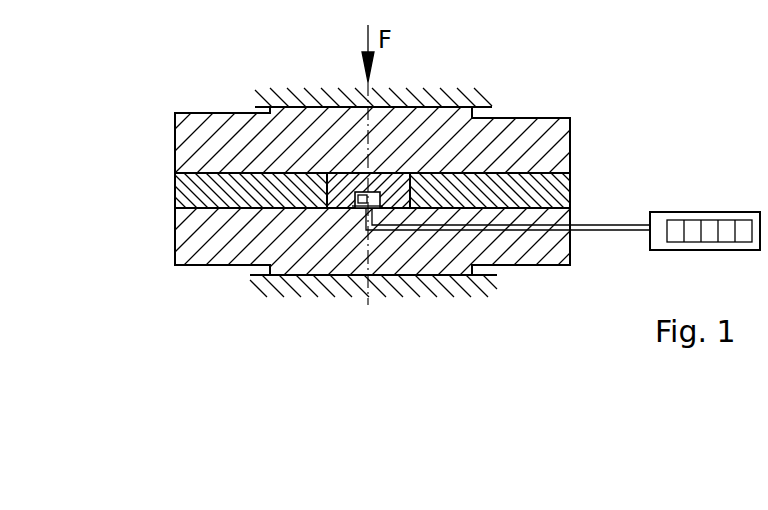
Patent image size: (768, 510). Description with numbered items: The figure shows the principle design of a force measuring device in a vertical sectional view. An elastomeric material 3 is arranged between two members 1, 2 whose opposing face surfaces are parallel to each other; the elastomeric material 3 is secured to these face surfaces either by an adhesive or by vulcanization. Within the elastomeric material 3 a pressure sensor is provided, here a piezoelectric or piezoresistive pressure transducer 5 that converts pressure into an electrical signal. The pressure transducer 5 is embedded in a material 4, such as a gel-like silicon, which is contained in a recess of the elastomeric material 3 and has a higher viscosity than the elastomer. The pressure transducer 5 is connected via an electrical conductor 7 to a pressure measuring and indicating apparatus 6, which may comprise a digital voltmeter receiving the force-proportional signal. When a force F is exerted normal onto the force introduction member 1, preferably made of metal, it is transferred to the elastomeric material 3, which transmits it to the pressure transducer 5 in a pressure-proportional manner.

The force introduction member 1 is at (185, 133).
The member 2 is at (188, 240).
The elastomeric material 3 is at (195, 190).
The material 4 is at (368, 158).
The pressure transducer 5 is at (417, 173).
The pressure measuring and indicating apparatus 6 is at (657, 222).
The electrical conductor 7 is at (605, 227).